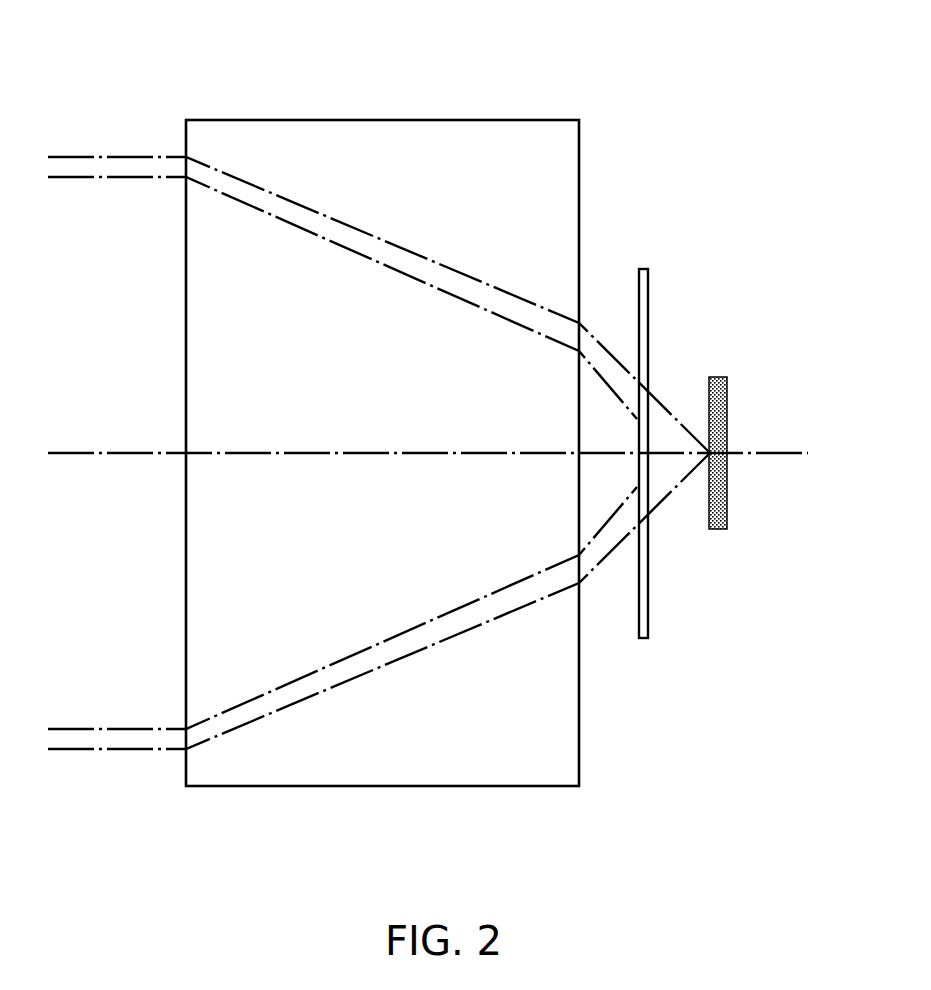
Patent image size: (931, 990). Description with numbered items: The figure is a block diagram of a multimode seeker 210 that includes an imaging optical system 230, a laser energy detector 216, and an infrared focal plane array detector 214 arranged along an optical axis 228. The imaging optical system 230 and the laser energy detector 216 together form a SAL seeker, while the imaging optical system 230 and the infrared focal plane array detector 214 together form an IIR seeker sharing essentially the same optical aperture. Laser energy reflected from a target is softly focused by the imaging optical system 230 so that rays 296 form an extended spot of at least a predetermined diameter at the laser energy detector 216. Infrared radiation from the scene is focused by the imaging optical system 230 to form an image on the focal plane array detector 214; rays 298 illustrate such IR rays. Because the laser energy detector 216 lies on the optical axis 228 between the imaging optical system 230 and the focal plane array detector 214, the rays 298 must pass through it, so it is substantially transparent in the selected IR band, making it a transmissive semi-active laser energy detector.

The multimode seeker 210 is at (570, 47).
The imaging optical system 230 is at (392, 120).
The laser energy detector 216 is at (649, 296).
The infrared focal plane array detector 214 is at (728, 400).
The optical axis 228 is at (80, 453).
The rays 298 is at (86, 157).
The rays 296 is at (84, 178).